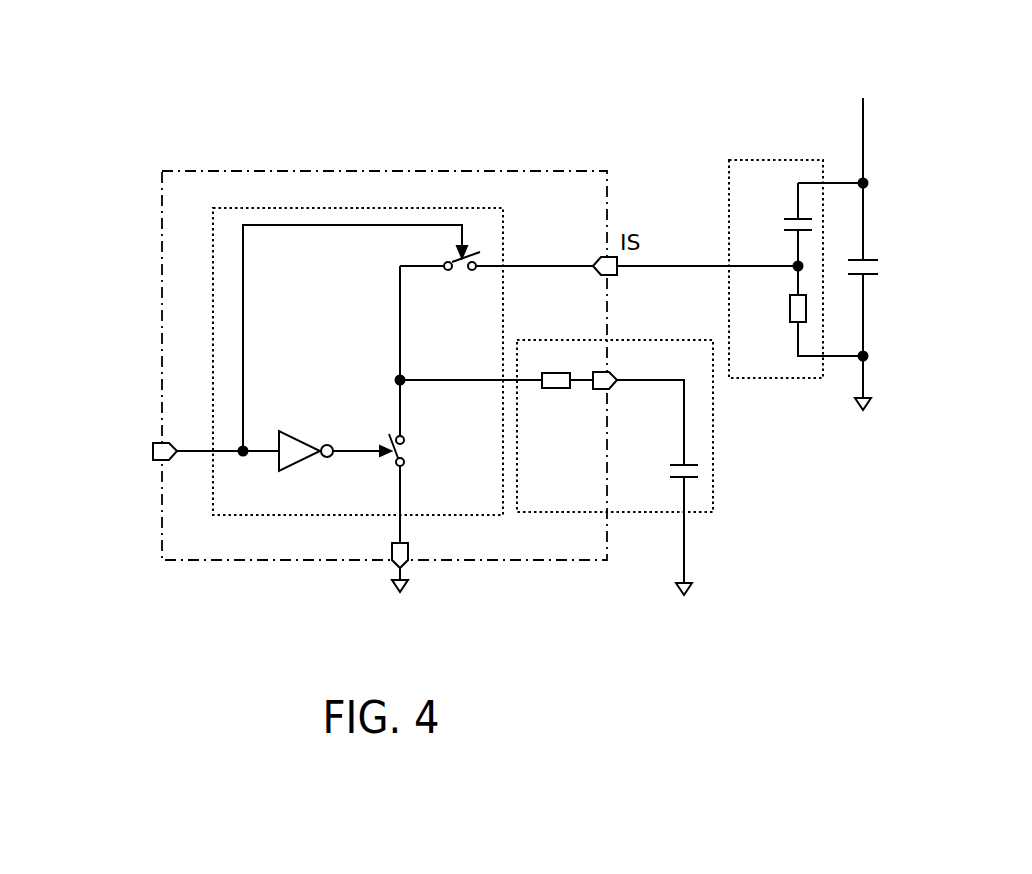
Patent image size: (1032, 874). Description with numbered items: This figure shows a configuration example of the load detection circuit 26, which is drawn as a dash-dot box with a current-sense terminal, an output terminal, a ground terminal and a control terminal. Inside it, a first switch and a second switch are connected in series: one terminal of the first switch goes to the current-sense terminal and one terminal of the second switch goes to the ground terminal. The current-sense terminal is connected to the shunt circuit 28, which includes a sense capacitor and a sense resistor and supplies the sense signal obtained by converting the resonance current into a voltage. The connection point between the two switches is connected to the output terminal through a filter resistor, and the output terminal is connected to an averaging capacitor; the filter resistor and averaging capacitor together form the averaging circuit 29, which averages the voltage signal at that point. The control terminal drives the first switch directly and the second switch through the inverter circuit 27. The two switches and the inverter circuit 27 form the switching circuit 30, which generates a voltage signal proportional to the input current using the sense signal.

The load detection circuit 26 is at (322, 171).
The inverter circuit 27 is at (296, 430).
The shunt circuit 28 is at (745, 160).
The averaging circuit 29 is at (713, 443).
The switching circuit 30 is at (237, 208).